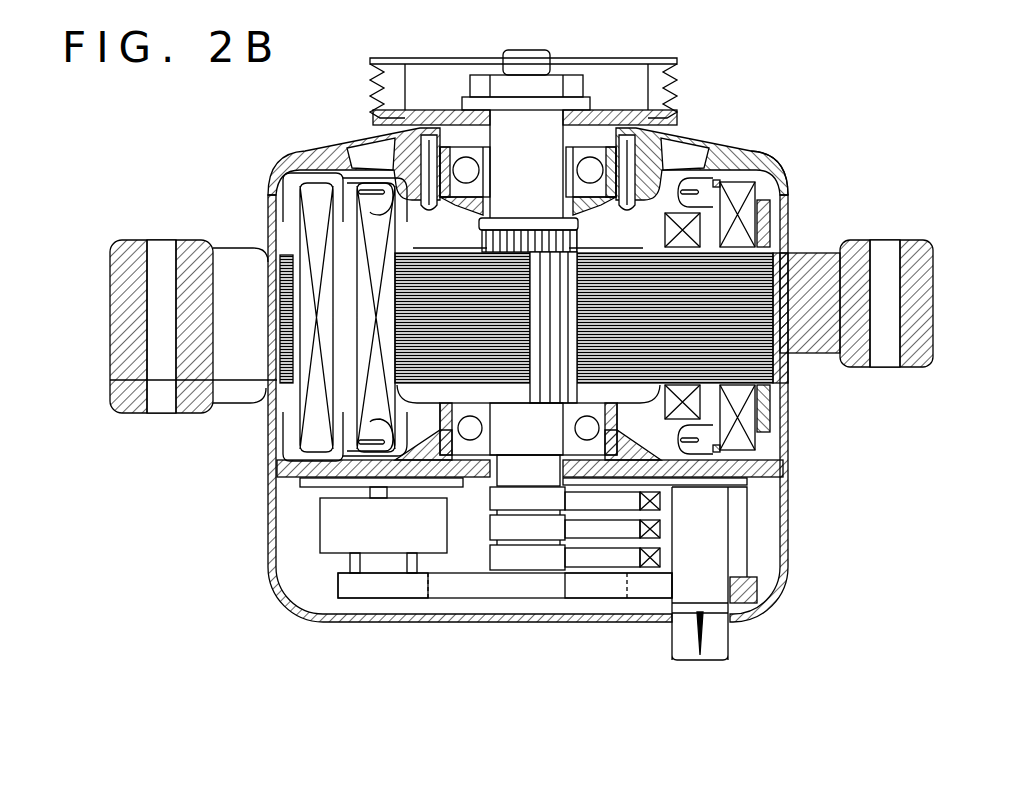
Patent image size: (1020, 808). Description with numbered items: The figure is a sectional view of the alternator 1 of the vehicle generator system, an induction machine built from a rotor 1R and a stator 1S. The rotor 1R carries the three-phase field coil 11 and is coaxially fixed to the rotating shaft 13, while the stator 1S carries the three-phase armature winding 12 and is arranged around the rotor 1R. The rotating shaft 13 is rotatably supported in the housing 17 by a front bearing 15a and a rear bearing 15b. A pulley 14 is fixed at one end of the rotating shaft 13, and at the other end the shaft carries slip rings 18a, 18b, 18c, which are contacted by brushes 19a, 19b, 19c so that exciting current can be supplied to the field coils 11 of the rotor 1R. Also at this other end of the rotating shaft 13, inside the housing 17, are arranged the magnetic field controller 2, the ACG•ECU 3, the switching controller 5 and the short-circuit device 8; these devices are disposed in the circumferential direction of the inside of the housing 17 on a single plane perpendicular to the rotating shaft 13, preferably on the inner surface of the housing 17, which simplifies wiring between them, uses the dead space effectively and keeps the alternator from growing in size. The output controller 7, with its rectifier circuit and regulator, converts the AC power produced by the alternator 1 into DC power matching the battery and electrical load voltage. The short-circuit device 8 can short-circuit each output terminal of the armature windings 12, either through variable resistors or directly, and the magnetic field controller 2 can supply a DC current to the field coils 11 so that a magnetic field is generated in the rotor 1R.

The alternator 1 is at (713, 141).
The stator 1S is at (790, 373).
The rotor 1R is at (745, 473).
The magnetic field controller 2 is at (440, 590).
The ACG•ECU 3 is at (603, 588).
The switching controller 5 is at (745, 593).
The output controller 7 is at (333, 538).
The short-circuit device 8 is at (358, 592).
The three-phase field coil 11 is at (345, 149).
The three-phase armature winding 12 is at (312, 197).
The rotating shaft 13 is at (550, 130).
The pulley 14 is at (680, 63).
The front bearing 15a is at (345, 148).
The rear bearing 15b is at (335, 478).
The housing 17 is at (747, 157).
The slip ring 18a is at (535, 503).
The slip ring 18b is at (512, 528).
The slip ring 18c is at (502, 558).
The brush 19a is at (578, 557).
The brush 19b is at (583, 528).
The brush 19c is at (583, 500).